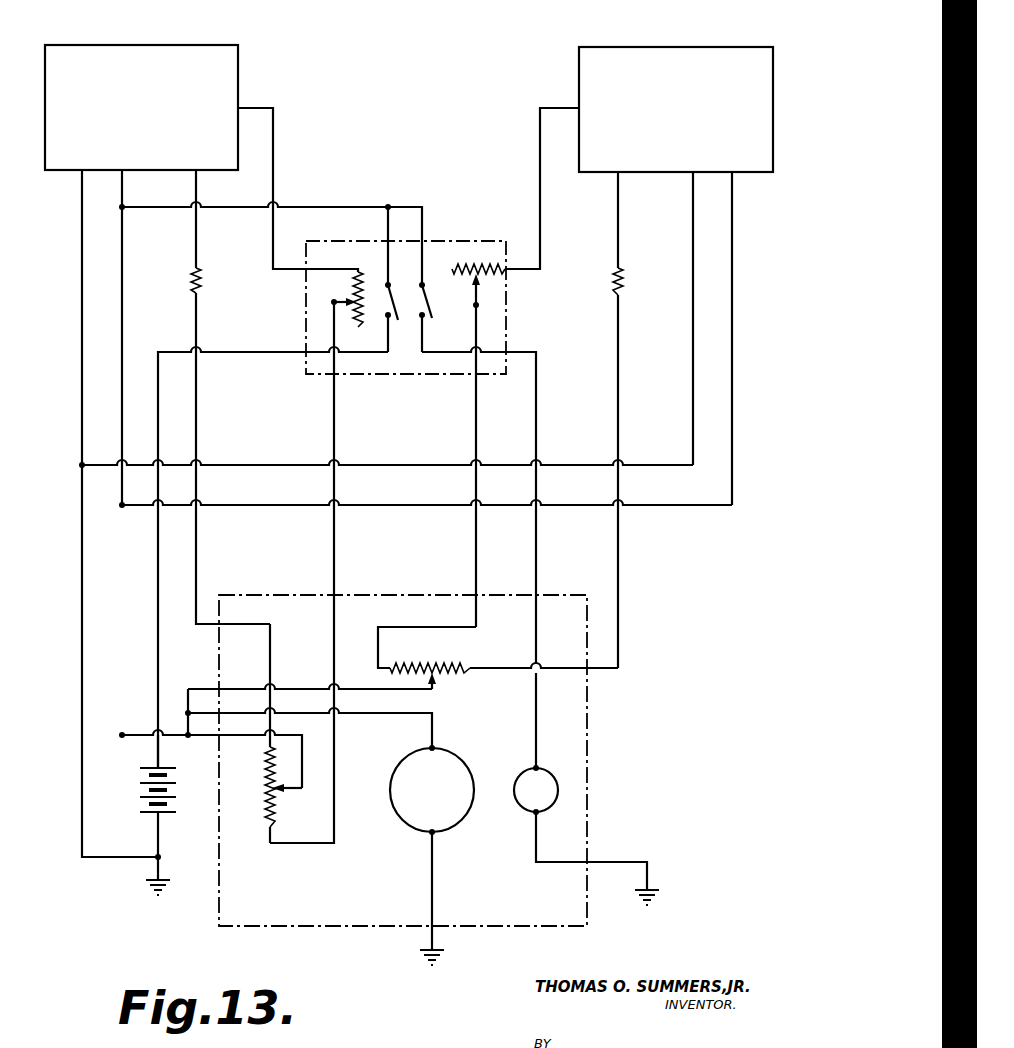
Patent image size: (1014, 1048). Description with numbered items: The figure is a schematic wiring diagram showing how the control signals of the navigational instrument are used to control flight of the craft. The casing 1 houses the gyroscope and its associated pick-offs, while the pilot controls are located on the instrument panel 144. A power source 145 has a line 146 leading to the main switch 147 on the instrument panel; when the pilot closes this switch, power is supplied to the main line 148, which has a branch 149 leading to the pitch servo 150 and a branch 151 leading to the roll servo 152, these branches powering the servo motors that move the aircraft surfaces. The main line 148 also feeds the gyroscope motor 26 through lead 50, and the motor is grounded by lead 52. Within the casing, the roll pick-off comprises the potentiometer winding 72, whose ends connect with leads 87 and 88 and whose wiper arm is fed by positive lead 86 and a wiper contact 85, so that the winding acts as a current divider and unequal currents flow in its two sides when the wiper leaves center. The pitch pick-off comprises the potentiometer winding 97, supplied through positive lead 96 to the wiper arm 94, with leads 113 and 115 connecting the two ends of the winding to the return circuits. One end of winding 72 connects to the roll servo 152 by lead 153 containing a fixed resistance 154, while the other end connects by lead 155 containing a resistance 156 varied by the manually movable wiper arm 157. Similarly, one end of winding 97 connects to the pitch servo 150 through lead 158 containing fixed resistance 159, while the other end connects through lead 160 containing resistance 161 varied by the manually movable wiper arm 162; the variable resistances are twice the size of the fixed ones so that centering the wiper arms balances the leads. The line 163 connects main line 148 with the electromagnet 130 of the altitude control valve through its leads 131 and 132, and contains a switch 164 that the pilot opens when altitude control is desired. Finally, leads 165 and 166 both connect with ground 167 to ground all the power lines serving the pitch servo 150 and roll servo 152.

The casing 1 is at (314, 930).
The gyroscope motor 26 is at (460, 759).
The lead 50 is at (376, 715).
The lead 52 is at (435, 888).
The potentiometer winding 72 is at (424, 662).
The roll potentiometer wiper 85 is at (438, 680).
The positive lead 86 is at (372, 690).
The lead 87 is at (400, 627).
The lead 88 is at (505, 672).
The wiper arm 94 is at (280, 786).
The positive lead 96 is at (302, 750).
The potentiometer winding 97 is at (278, 805).
The lead 113 is at (272, 645).
The lead 115 is at (337, 775).
The electromagnet 130 is at (546, 771).
The lead 131 is at (540, 712).
The lead 132 is at (556, 863).
The instrument panel 144 is at (452, 245).
The power source 145 is at (141, 787).
The line 146 is at (160, 560).
The main switch 147 is at (399, 322).
The main line 148 is at (125, 323).
The branch 149 is at (126, 190).
The pitch servo 150 is at (205, 45).
The branch 151 is at (735, 485).
The roll servo 152 is at (698, 47).
The lead 153 is at (620, 573).
The fixed resistance 154 is at (625, 282).
The lead 155 is at (479, 421).
The resistance 156 is at (480, 262).
The wiper arm 157 is at (481, 296).
The lead 158 is at (198, 568).
The fixed resistance 159 is at (204, 282).
The lead 160 is at (337, 548).
The resistance 161 is at (354, 320).
The wiper arm 162 is at (337, 300).
The line 163 is at (425, 211).
The switch 164 is at (432, 316).
The lead 165 is at (82, 368).
The lead 166 is at (693, 382).
The ground 167 is at (157, 875).